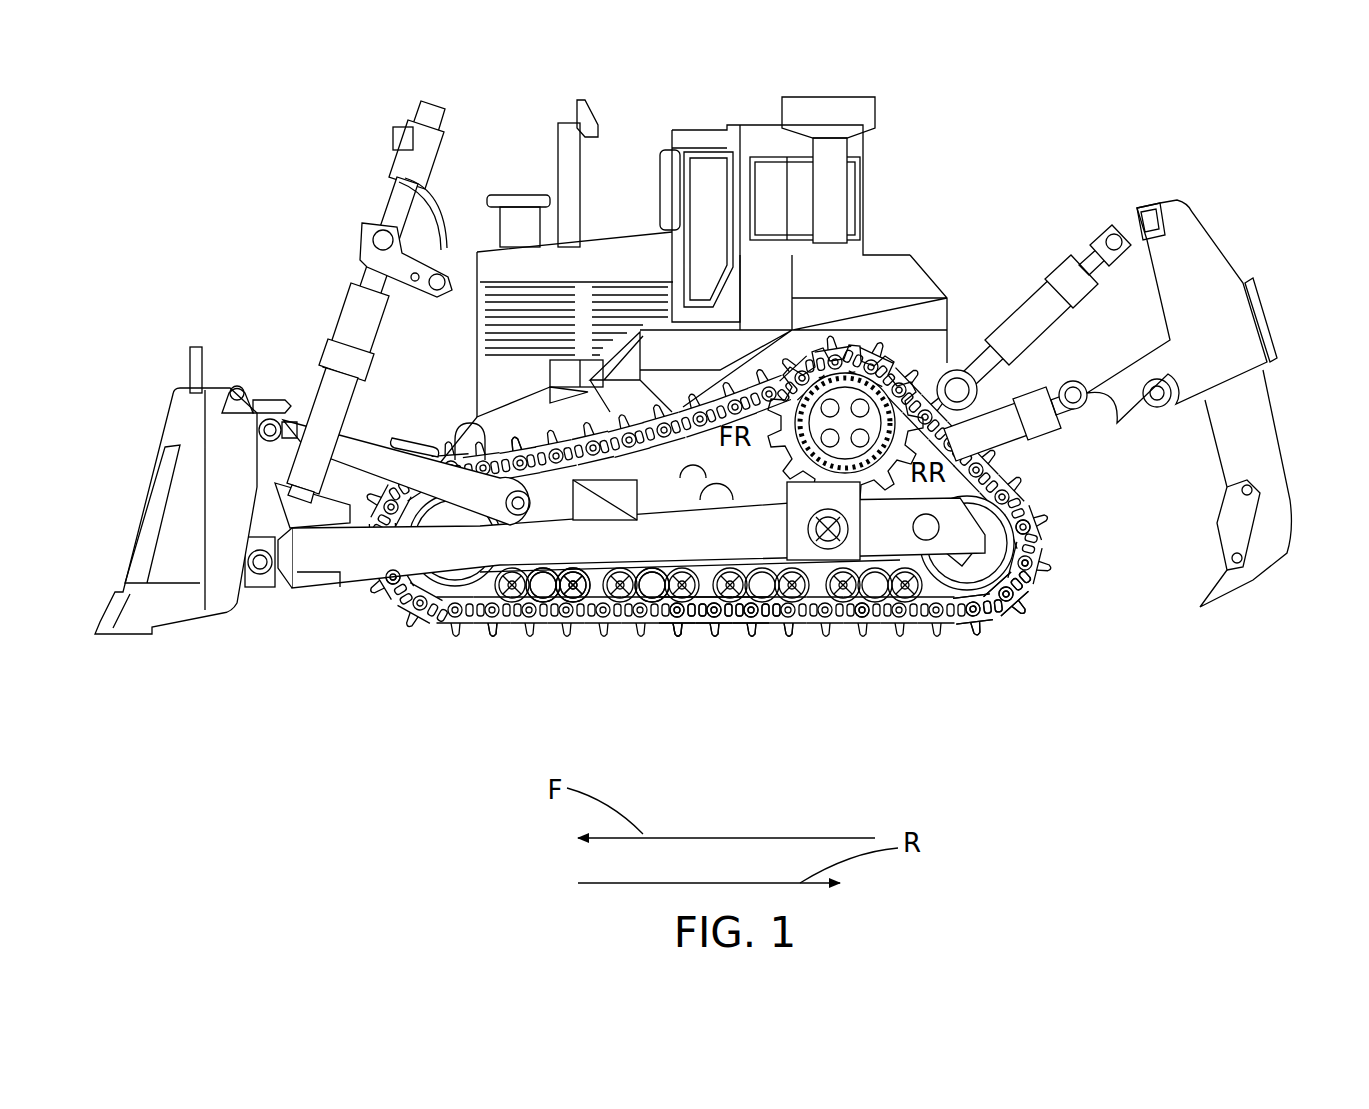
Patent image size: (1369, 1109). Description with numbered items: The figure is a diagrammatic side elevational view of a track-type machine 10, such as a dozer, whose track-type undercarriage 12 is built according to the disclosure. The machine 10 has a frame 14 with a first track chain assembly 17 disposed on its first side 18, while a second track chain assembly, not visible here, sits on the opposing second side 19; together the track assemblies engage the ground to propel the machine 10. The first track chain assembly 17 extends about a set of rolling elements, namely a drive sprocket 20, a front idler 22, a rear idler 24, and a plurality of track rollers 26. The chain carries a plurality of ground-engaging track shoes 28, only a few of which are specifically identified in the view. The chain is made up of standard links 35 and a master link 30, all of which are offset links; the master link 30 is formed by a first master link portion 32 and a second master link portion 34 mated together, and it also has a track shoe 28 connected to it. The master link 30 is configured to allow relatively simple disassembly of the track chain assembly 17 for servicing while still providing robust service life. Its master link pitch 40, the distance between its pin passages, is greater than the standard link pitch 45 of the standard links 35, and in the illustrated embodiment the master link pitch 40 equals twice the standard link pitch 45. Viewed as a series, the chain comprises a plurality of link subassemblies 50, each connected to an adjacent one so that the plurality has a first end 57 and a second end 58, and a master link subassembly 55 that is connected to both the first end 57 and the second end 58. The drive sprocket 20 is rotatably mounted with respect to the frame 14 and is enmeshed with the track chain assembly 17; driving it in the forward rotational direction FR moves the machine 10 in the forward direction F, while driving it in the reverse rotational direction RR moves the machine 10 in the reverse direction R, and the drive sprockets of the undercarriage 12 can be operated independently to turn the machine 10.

The machine 10 is at (1083, 177).
The track-type undercarriage 12 is at (1037, 597).
The frame 14 is at (717, 458).
The first track chain assembly 17 is at (1007, 623).
The first side 18 is at (897, 277).
The second side 19 is at (627, 228).
The drive sprocket 20 is at (925, 385).
The front idler 22 is at (450, 587).
The rear idler 24 is at (983, 553).
The track rollers 26 is at (557, 595).
The track shoes 28 is at (737, 615).
The master link 30 is at (697, 622).
The first master link portion 32 is at (713, 595).
The second master link portion 34 is at (745, 622).
The standard links 35 is at (397, 590).
The master link pitch 40 is at (741, 800).
The standard link pitch 45 is at (390, 586).
The link subassemblies 50 is at (517, 440).
The master link subassembly 55 is at (673, 643).
The first end 57 is at (645, 577).
The second end 58 is at (748, 612).